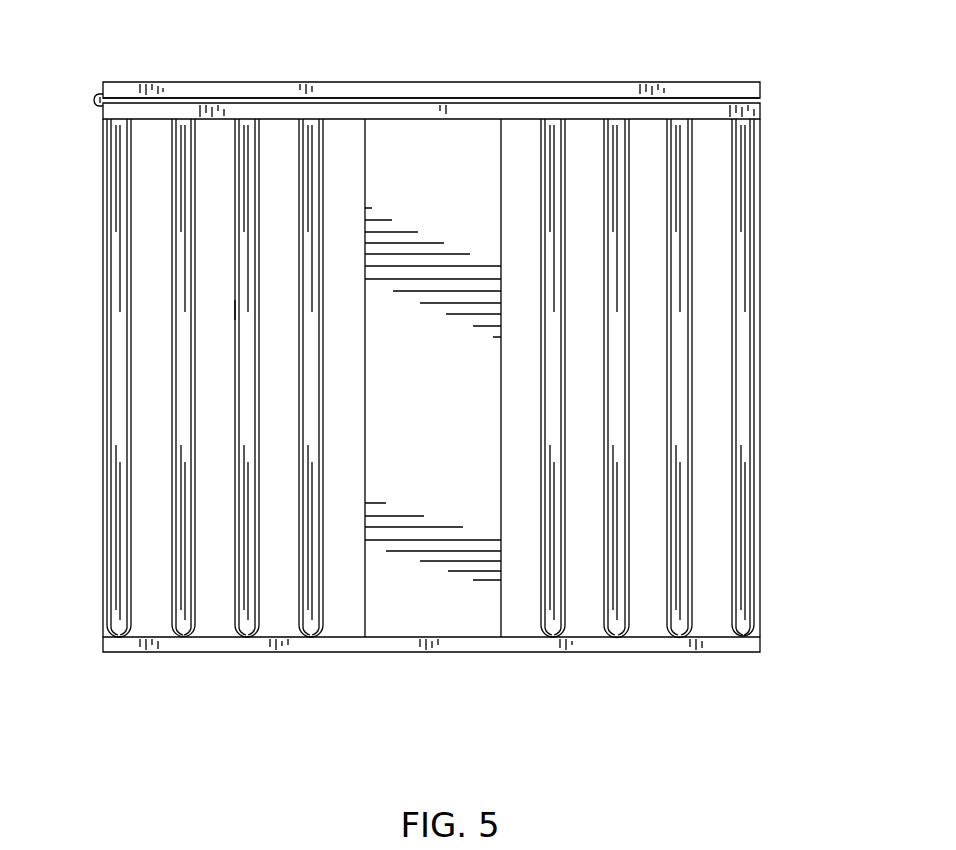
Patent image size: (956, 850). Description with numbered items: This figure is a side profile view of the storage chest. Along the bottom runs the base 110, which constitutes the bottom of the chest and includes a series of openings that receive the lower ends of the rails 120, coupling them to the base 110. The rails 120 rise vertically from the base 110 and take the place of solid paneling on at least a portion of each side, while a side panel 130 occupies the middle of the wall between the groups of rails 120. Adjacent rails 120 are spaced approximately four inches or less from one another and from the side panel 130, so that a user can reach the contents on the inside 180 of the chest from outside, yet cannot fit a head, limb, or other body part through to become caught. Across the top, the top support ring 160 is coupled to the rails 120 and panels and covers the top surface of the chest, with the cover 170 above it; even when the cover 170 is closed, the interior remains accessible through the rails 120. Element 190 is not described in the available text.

The base 110 is at (745, 645).
The rails 120 is at (110, 626).
The side panel 130 is at (421, 616).
The top support ring 160 is at (757, 113).
The cover 170 is at (343, 92).
The inside 180 is at (265, 310).
The hinge knob 190 is at (97, 98).